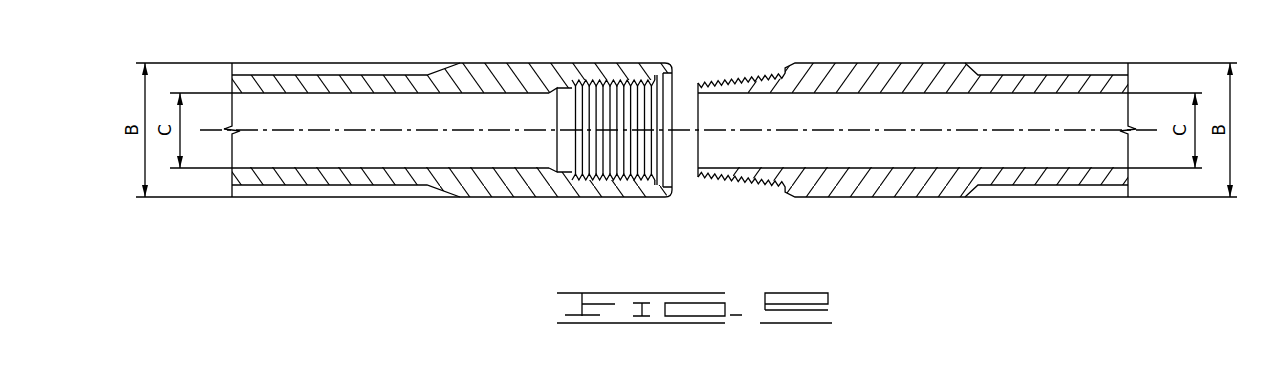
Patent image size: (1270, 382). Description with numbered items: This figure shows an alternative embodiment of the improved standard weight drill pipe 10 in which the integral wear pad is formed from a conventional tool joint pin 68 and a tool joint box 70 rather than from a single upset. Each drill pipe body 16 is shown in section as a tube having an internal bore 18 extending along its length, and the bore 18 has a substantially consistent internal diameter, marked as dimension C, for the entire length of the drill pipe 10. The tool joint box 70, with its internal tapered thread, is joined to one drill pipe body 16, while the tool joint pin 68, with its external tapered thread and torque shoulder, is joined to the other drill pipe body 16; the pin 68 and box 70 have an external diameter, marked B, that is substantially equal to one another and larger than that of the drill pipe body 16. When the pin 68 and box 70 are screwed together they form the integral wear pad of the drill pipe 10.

The drill pipe 10 is at (282, 367).
The drill pipe body 16 is at (330, 75).
The internal bore 18 is at (462, 168).
The tool joint pin 68 is at (887, 63).
The tool joint box 70 is at (580, 63).